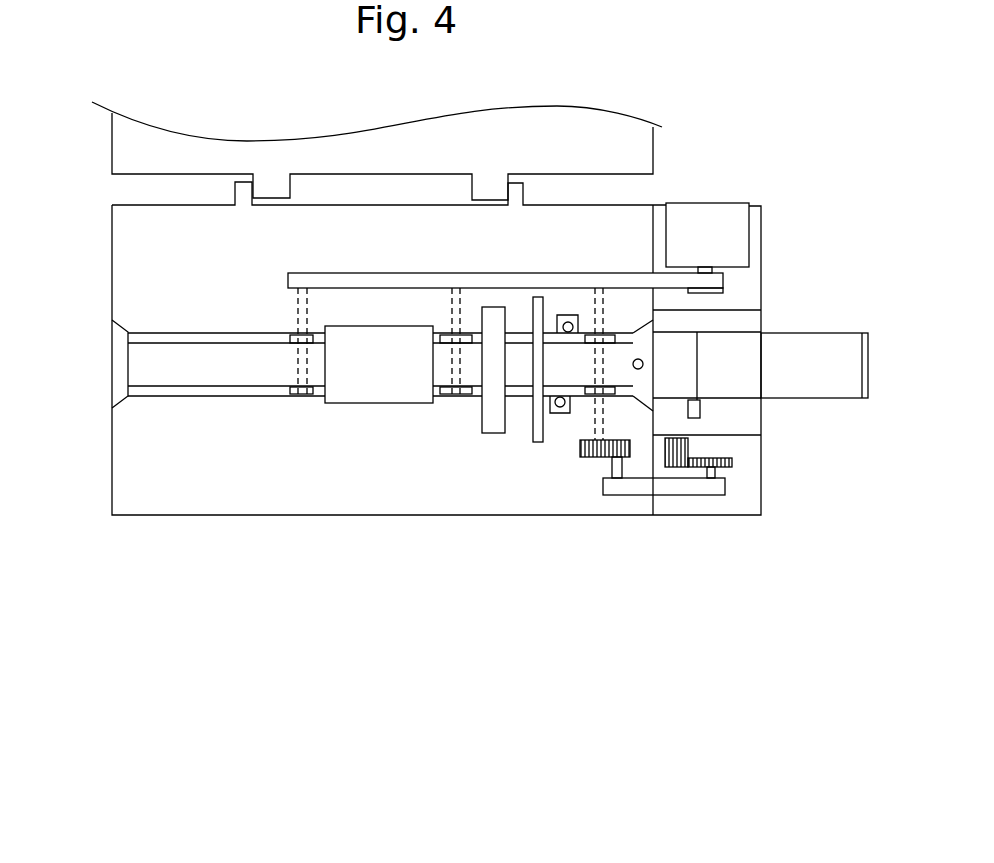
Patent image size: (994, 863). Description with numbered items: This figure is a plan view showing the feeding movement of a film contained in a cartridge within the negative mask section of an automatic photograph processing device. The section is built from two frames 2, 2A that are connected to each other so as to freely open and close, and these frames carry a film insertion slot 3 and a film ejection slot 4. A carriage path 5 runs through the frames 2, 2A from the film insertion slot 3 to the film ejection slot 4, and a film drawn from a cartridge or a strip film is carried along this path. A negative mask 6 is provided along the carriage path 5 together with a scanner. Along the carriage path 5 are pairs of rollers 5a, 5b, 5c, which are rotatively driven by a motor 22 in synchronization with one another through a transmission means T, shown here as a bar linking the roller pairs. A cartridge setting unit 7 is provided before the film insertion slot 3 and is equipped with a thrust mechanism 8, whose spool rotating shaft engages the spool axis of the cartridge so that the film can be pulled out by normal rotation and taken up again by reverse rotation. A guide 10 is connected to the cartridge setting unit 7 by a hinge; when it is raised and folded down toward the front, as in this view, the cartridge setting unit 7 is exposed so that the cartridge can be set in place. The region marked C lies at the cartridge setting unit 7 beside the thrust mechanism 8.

The frame 2 is at (110, 145).
The frame 2A is at (112, 273).
The film insertion slot 3 is at (646, 368).
The film ejection slot 4 is at (120, 368).
The carriage path 5 is at (243, 378).
The pair of rollers 5a is at (590, 398).
The pair of rollers 5b is at (457, 397).
The pair of rollers 5c is at (298, 390).
The negative mask 6 is at (393, 383).
The cartridge setting unit 7 is at (735, 390).
The thrust mechanism 8 is at (677, 467).
The guide 10 is at (803, 390).
The motor 22 is at (723, 215).
The coupling C is at (678, 388).
The transmission means T is at (573, 277).